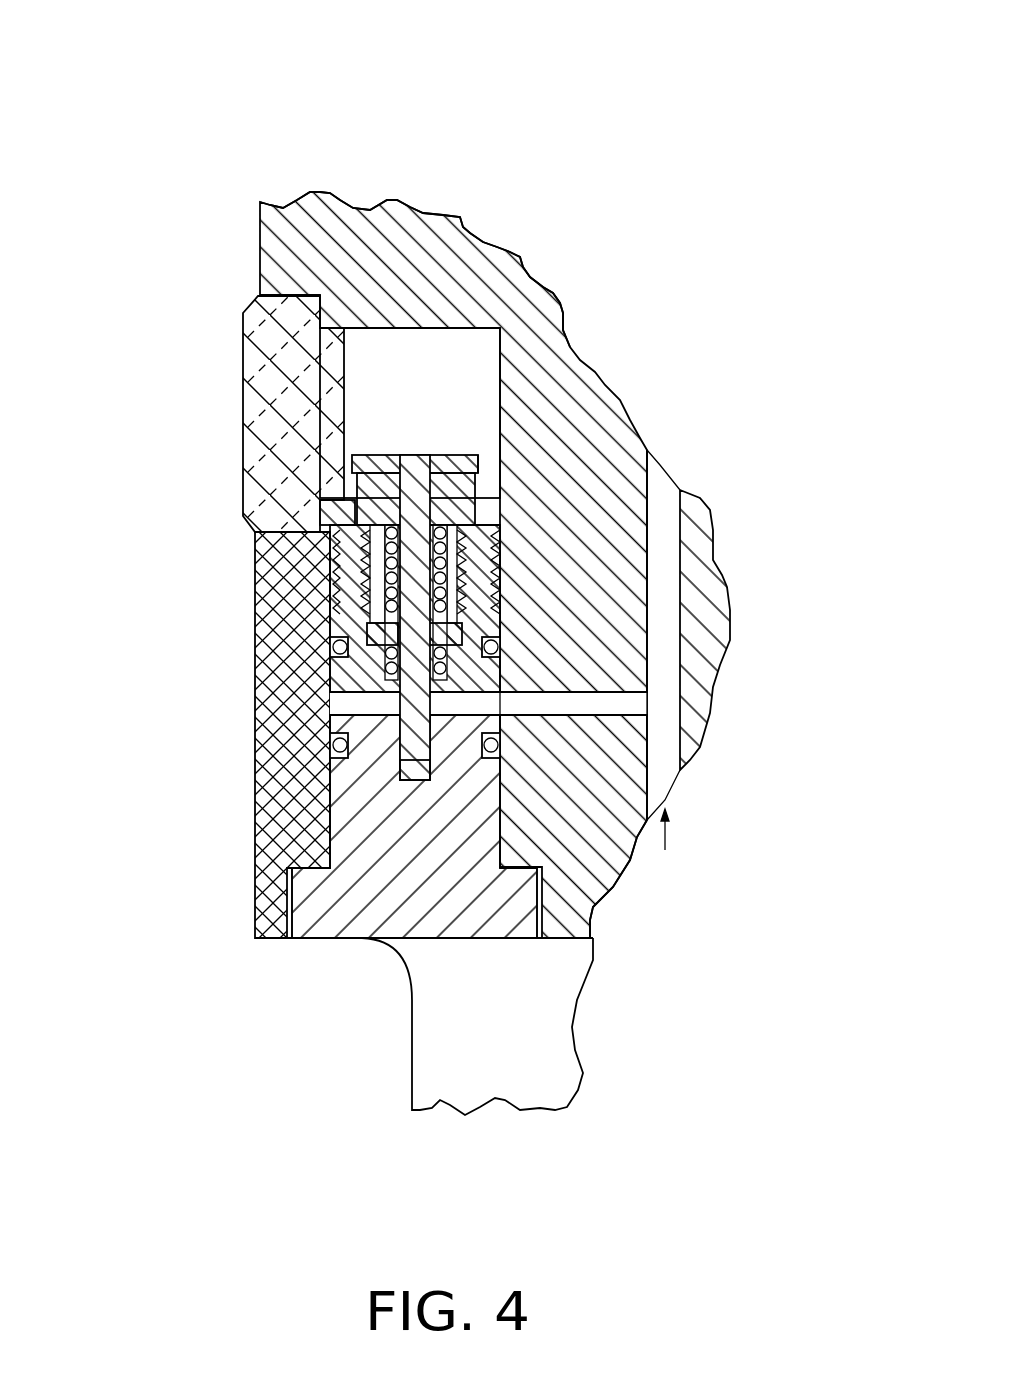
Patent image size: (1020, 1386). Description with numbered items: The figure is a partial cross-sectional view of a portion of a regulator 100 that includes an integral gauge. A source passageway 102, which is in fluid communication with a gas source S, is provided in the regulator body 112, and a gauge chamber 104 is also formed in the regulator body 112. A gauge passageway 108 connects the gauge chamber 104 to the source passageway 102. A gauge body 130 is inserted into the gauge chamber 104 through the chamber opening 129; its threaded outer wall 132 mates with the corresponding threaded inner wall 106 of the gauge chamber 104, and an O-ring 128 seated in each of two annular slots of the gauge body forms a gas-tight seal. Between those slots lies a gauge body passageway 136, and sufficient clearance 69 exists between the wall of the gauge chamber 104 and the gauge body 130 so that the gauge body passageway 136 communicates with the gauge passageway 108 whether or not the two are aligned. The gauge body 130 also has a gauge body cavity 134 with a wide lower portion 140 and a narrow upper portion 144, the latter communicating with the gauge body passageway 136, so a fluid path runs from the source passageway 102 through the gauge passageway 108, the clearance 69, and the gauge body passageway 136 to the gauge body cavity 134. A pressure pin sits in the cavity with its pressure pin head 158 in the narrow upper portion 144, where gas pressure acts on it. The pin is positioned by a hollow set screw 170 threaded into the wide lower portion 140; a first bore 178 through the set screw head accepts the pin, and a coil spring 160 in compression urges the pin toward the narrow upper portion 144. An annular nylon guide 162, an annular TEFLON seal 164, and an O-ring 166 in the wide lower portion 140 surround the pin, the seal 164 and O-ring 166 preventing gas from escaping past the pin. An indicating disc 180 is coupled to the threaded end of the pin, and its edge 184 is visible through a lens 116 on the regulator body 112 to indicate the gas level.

The regulator 100 is at (334, 184).
The regulator body 112 is at (468, 258).
The gauge chamber 104 is at (463, 393).
The edge of the indicating disc 184 is at (480, 465).
The annular nylon guide 162 is at (453, 627).
The source passageway 102 is at (667, 607).
The O-ring 166 is at (443, 671).
The gas source S is at (665, 849).
The gauge passageway 108 is at (637, 858).
The clearance 69 is at (560, 703).
The gauge body passageway 136 is at (503, 723).
The gauge body 130 is at (400, 940).
The narrow upper portion 144 is at (413, 777).
The gauge body cavity 134 is at (403, 768).
The chamber opening 129 is at (292, 915).
The pressure pin head 158 is at (360, 830).
The O-ring 128 is at (333, 652).
The wide lower portion 140 is at (400, 740).
The annular TEFLON seal 164 is at (333, 745).
The coil spring 160 is at (345, 630).
The threaded inner wall 106 is at (275, 605).
The threaded outer wall 132 is at (335, 560).
The first bore 178 is at (362, 535).
The lens 116 is at (243, 435).
The hollow set screw 170 is at (325, 500).
The indicating disc 180 is at (375, 453).